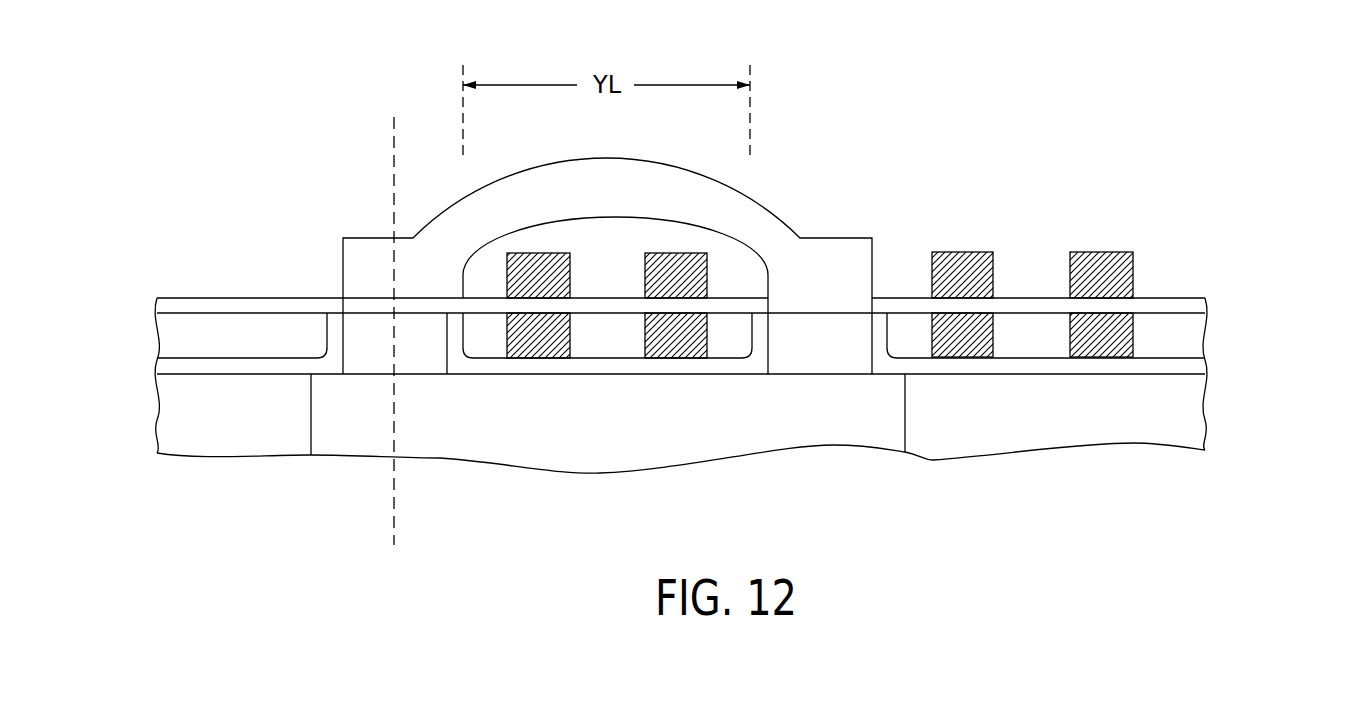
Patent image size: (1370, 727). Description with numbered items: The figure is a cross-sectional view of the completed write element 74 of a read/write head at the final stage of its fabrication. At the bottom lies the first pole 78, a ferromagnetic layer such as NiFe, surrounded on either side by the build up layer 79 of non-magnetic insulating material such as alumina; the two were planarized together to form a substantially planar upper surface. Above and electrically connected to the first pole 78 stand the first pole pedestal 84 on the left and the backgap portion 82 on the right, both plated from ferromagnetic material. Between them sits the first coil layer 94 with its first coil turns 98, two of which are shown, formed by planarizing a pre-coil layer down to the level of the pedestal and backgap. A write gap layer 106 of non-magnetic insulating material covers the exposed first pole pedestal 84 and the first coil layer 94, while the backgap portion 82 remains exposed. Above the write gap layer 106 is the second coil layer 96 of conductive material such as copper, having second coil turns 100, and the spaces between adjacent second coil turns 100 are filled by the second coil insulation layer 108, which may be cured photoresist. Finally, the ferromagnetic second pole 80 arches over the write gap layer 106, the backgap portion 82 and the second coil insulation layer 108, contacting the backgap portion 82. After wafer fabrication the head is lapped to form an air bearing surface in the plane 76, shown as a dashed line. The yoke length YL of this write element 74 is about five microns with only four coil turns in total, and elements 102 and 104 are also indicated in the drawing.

The write element 74 is at (1310, 170).
The plane 76 is at (394, 146).
The first pole 78 is at (717, 440).
The build up layer 79 is at (225, 435).
The second pole 80 is at (832, 245).
The backgap portion 82 is at (818, 352).
The first pole pedestal 84 is at (417, 323).
The first coil layer 94 is at (1150, 332).
The second coil layer 96 is at (1150, 267).
The first coil turns 98 is at (542, 348).
The second coil turns 100 is at (680, 263).
The insulation layer 102 is at (457, 365).
The insulating groove 104 is at (492, 345).
The write gap layer 106 is at (245, 307).
The second coil insulation layer 108 is at (487, 278).